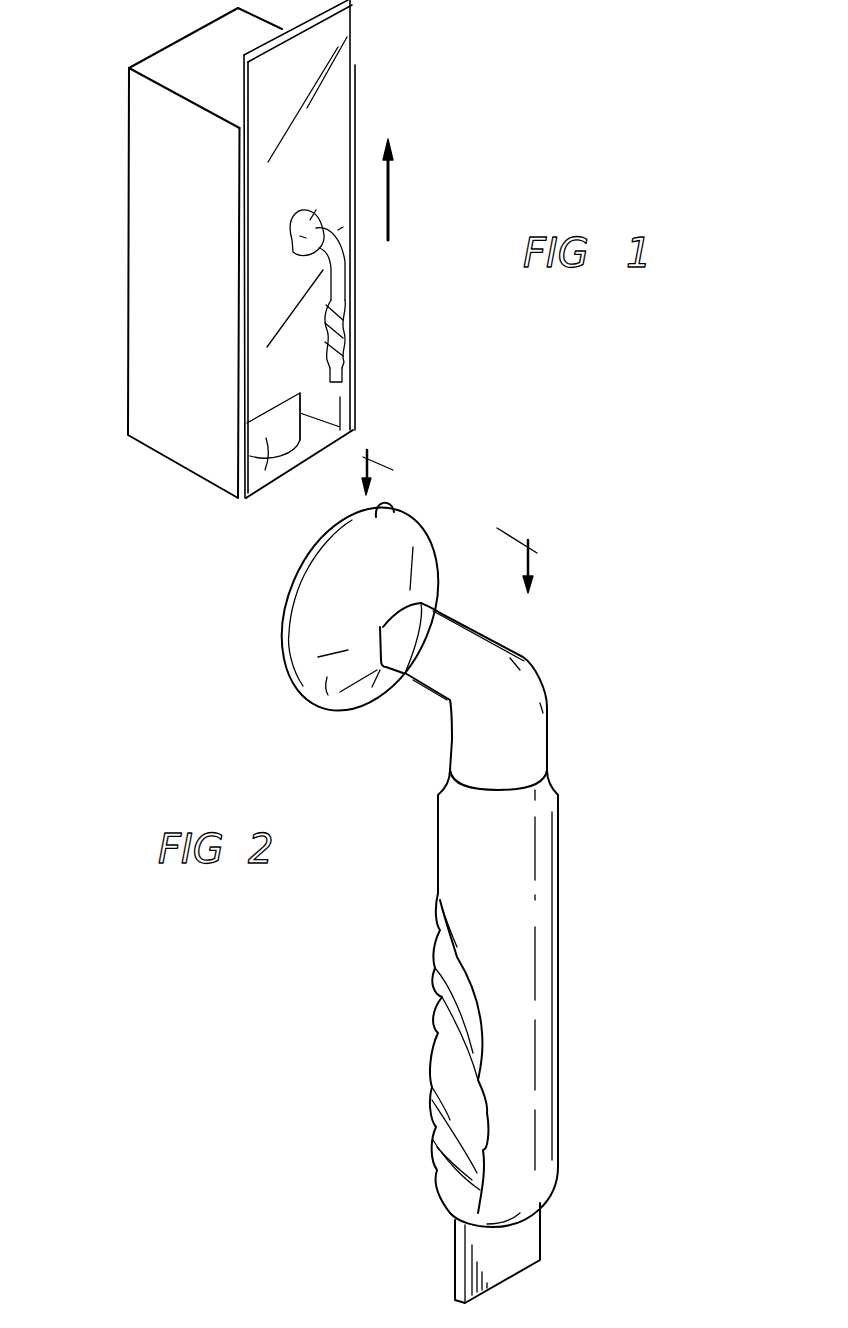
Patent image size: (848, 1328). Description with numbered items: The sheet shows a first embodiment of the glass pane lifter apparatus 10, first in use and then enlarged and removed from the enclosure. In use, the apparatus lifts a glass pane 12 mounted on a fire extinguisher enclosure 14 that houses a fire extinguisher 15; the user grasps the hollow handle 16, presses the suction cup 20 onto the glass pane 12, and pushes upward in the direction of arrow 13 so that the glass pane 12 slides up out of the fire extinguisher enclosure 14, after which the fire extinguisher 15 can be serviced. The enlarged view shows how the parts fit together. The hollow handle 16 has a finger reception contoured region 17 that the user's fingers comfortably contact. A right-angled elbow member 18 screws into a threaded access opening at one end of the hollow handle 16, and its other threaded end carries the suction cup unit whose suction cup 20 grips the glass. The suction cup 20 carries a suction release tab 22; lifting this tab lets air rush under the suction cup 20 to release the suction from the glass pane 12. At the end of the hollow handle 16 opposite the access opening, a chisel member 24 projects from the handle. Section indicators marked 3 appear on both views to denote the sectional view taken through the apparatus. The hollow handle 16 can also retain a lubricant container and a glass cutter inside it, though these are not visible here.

In FIG. 1, the glass pane lifter apparatus 10 is at (277, 273).
In FIG. 2, the glass pane lifter apparatus 10 is at (593, 693).
In FIG. 1, the glass pane 12 is at (350, 40).
In FIG. 1, the arrow 13 is at (393, 197).
In FIG. 1, the fire extinguisher enclosure 14 is at (143, 157).
In FIG. 1, the fire extinguisher 15 is at (267, 477).
In FIG. 2, the hollow handle 16 is at (525, 885).
In FIG. 2, the finger reception contoured region 17 is at (390, 1205).
In FIG. 2, the elbow member 18 is at (508, 689).
In FIG. 2, the suction cup 20 is at (330, 702).
In FIG. 2, the suction release tab 22 is at (394, 512).
In FIG. 2, the chisel member 24 is at (527, 1235).
In FIG. 1, the section line 3- 3 is at (377, 455).
In FIG. 2, the section line 3- 3 is at (519, 551).